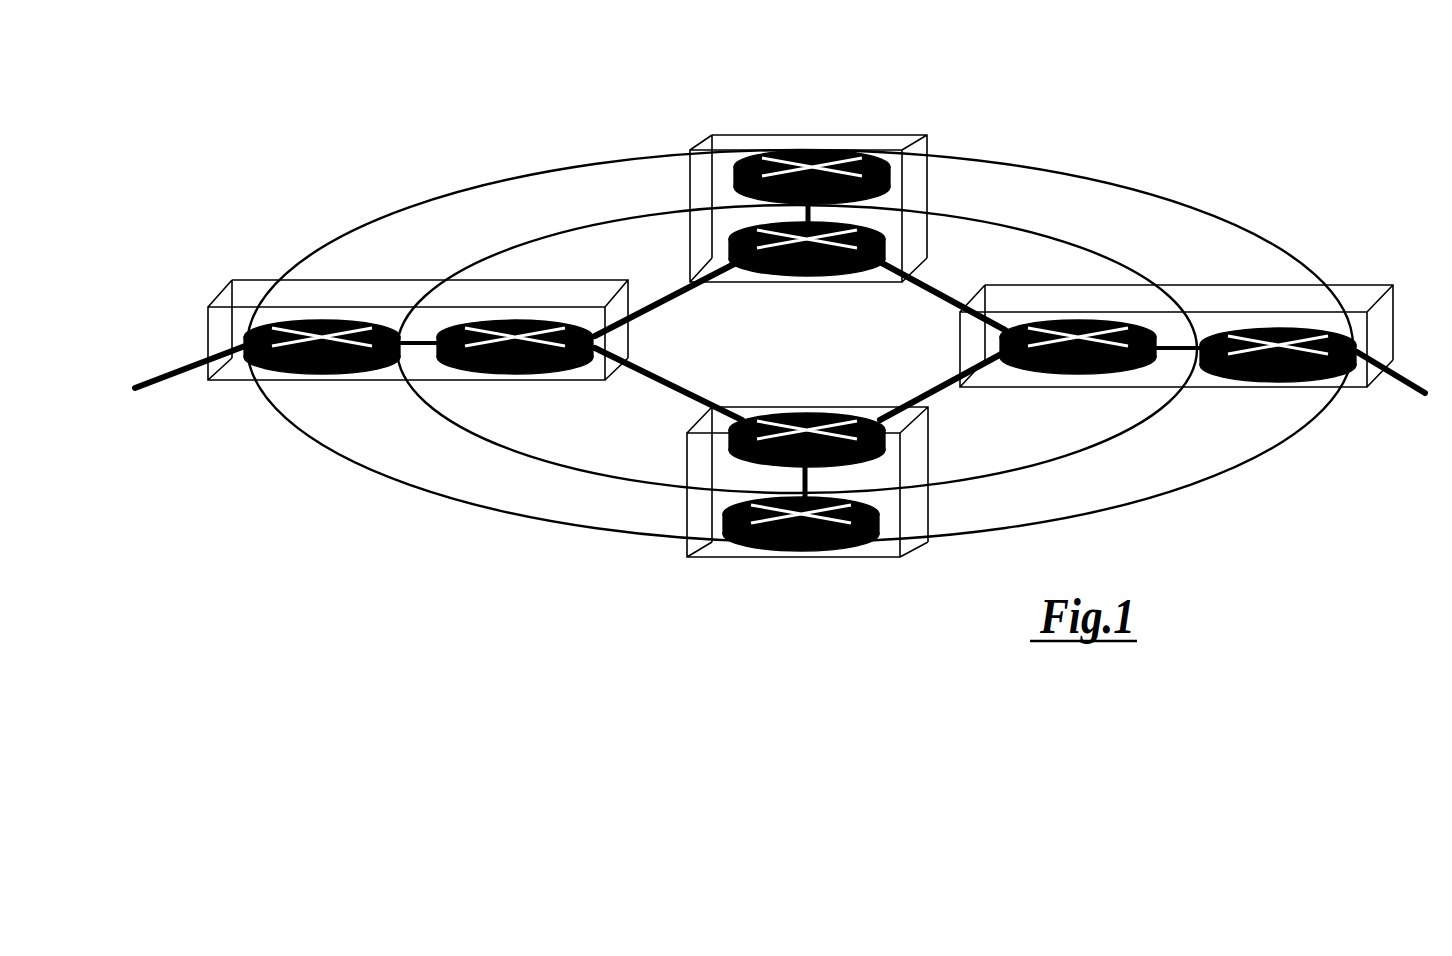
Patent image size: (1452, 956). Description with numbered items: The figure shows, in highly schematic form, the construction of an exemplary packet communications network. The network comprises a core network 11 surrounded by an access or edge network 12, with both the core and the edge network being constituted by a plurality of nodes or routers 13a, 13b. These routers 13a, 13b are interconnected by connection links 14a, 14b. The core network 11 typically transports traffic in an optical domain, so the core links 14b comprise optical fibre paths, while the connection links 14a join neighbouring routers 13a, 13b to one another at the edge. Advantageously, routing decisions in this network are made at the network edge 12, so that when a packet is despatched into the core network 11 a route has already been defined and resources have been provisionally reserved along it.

The core network 11 is at (1165, 88).
The edge network 12 is at (1332, 163).
The router 13a is at (298, 380).
The router 13b is at (505, 383).
The connection link 14a is at (418, 340).
The core link 14b is at (660, 405).